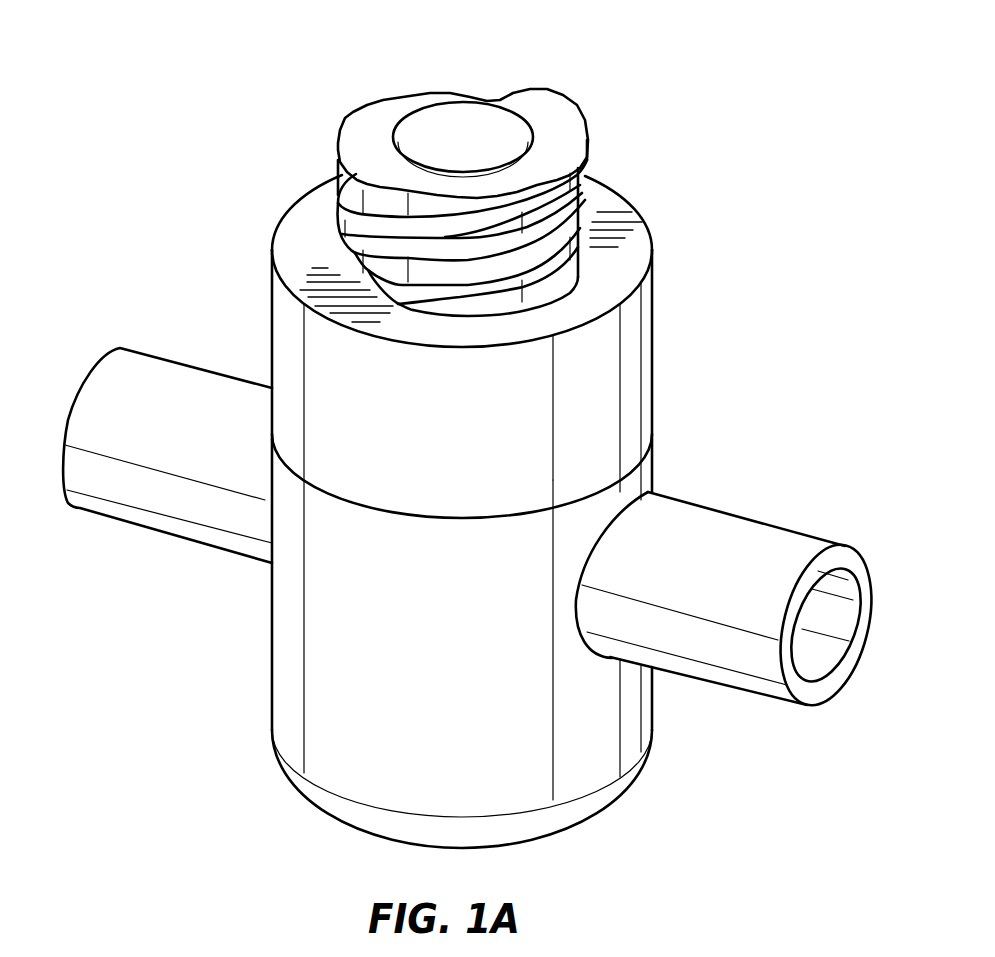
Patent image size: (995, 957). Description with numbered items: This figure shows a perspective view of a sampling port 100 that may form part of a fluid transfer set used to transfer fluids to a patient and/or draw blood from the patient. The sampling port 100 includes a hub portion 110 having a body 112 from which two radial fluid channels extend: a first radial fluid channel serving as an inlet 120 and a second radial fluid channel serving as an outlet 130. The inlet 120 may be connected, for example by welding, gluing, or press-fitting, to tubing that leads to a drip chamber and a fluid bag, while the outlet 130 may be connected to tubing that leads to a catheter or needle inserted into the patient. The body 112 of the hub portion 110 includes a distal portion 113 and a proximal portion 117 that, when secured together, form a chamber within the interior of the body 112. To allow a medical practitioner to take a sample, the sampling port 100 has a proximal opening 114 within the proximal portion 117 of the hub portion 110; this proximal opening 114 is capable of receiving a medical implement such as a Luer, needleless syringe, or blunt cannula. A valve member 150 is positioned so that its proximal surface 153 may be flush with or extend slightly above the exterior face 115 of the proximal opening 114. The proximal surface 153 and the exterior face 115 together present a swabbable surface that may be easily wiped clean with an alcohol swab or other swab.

The sampling port 100 is at (243, 128).
The hub portion 110 is at (633, 327).
The body 112 is at (333, 648).
The distal portion 113 is at (590, 735).
The proximal opening 114 is at (498, 108).
The exterior face 115 is at (553, 122).
The proximal portion 117 is at (652, 397).
The inlet 120 is at (150, 408).
The outlet 130 is at (763, 567).
The valve member 150 is at (410, 133).
The proximal surface 153 is at (455, 125).